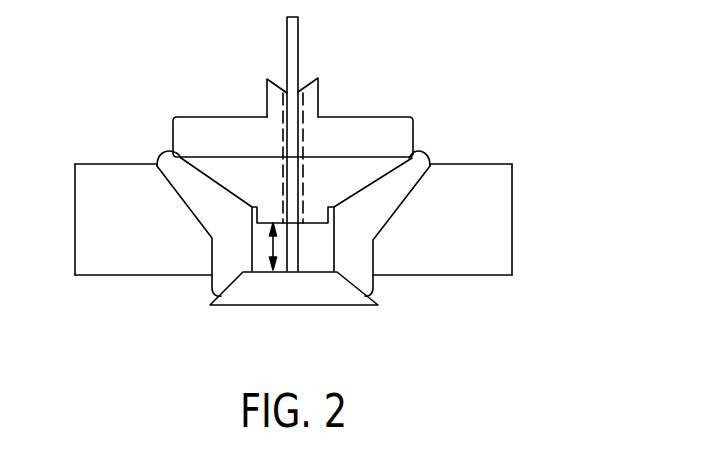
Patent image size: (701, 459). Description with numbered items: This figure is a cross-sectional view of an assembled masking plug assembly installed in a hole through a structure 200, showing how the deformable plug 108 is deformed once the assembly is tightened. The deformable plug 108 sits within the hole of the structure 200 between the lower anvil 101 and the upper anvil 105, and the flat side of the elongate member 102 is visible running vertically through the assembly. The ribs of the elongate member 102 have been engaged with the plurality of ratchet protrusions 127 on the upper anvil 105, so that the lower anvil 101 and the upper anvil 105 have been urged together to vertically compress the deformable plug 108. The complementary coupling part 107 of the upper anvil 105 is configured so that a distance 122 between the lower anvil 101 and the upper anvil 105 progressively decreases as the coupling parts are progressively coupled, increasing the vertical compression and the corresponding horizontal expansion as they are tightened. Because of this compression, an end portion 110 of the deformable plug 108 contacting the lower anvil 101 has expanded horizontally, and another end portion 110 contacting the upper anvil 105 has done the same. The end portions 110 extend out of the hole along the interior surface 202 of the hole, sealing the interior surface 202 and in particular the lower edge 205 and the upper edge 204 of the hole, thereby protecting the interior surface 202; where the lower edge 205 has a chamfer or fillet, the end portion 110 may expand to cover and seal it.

The lower anvil 101 is at (235, 308).
The elongate member 102 is at (298, 28).
The upper anvil 105 is at (400, 117).
The complementary coupling part 107 is at (321, 90).
The deformable plug 108 is at (175, 197).
The end portion 110 is at (427, 160).
The distance 122 is at (271, 247).
The ratchet protrusions 127 is at (321, 105).
The structure 200 is at (512, 220).
The interior surface 202 is at (373, 252).
The upper edge 204 is at (430, 163).
The lower edge 205 is at (376, 277).